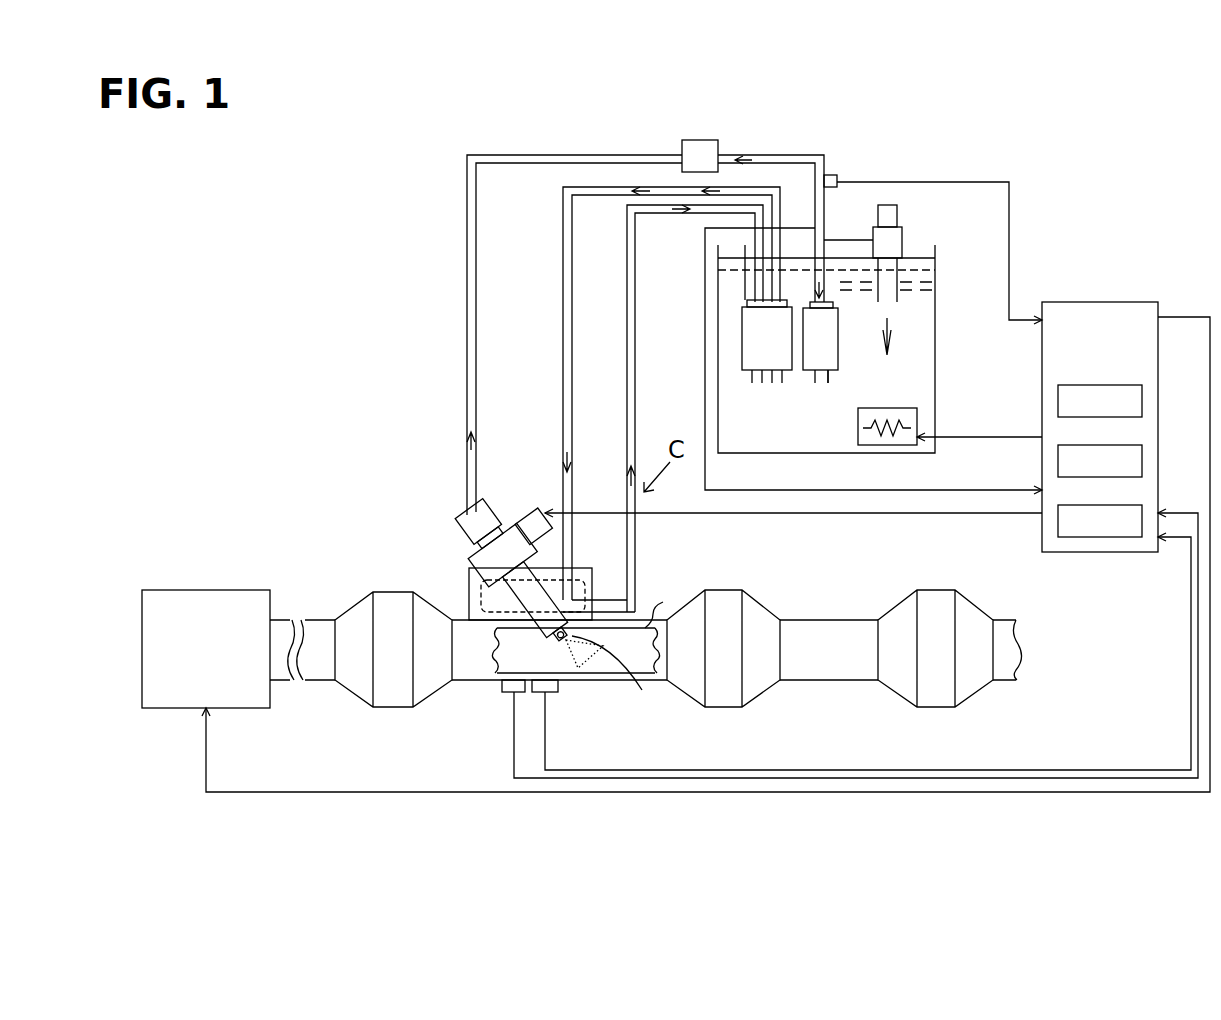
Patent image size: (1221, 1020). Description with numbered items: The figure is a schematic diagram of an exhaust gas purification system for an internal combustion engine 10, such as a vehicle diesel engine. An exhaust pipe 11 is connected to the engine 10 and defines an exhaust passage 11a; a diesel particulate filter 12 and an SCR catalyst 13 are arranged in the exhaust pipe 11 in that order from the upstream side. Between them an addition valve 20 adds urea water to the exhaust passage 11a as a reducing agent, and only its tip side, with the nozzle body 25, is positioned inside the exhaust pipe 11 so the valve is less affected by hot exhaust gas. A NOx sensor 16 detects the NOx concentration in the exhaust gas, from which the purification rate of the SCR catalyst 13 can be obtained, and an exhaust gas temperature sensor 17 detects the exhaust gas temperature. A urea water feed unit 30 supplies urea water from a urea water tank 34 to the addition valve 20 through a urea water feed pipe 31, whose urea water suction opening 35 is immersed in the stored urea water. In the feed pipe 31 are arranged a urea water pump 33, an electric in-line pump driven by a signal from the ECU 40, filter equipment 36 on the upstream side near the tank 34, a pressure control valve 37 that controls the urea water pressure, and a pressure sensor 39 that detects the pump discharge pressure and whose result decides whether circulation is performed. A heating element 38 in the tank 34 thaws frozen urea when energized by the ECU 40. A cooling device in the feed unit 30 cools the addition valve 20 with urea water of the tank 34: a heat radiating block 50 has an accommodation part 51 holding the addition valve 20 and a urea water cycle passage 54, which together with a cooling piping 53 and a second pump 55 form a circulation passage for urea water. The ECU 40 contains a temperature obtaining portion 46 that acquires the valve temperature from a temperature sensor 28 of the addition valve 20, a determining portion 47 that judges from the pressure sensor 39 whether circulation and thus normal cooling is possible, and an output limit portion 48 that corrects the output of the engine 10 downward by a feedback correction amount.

The internal combustion engine 10 is at (248, 590).
The exhaust pipe 11 is at (596, 680).
The exhaust passage 11a is at (671, 595).
The diesel particulate filter 12 is at (398, 592).
The SCR catalyst 13 is at (720, 592).
The NOx sensor 16 is at (506, 691).
The exhaust gas temperature sensor 17 is at (542, 691).
The addition valve 20 is at (498, 522).
The nozzle body 25 is at (617, 679).
The temperature sensor 28 is at (560, 640).
The urea water feed unit 30 is at (976, 150).
The urea water feed pipe 31 is at (524, 160).
The urea water pump 33 is at (812, 374).
The urea water tank 34 is at (936, 392).
The urea water suction opening 35 is at (832, 378).
The filter equipment 36 is at (710, 140).
The pressure control valve 37 is at (902, 240).
The heating element 38 is at (858, 434).
The pressure sensor 39 is at (832, 174).
The ECU 40 is at (1100, 407).
The temperature obtaining portion 46 is at (1092, 382).
The determining portion 47 is at (1092, 442).
The output limit portion 48 is at (1092, 502).
The heat radiating block 50 is at (517, 563).
The accommodation part 51 is at (572, 598).
The cooling piping 53 is at (627, 428).
The urea water cycle passage 54 is at (470, 600).
The second pump 55 is at (750, 374).